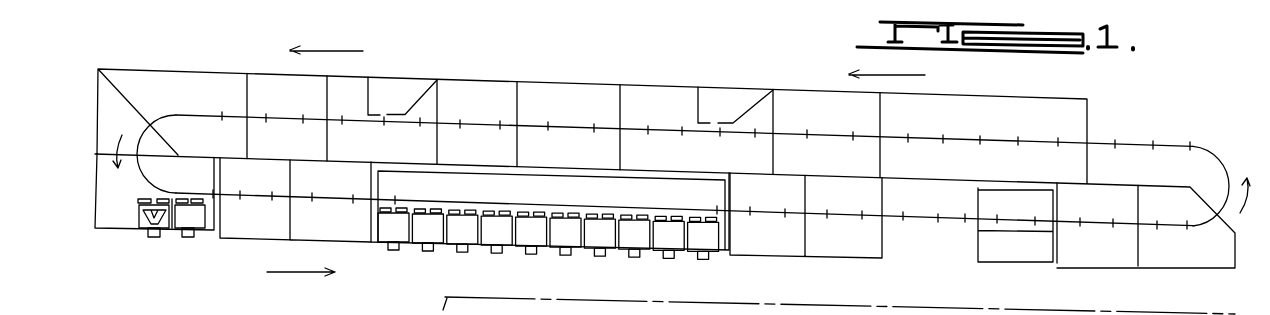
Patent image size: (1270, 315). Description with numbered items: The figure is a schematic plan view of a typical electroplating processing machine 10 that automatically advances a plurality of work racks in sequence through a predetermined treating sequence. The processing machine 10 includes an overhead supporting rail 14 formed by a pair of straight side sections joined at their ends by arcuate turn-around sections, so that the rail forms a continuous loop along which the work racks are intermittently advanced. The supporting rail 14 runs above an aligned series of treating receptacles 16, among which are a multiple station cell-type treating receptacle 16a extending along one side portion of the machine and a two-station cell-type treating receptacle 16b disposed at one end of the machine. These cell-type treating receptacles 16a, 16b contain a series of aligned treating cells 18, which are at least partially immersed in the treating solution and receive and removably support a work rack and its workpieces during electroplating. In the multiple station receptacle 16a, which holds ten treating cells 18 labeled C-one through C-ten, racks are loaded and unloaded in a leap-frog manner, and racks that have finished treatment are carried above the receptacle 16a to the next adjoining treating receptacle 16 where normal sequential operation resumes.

The processing machine 10 is at (1106, 129).
The overhead supporting rail 14 is at (920, 222).
The treating receptacles 16 is at (637, 89).
The multiple station cell-type treating receptacle 16a is at (555, 240).
The two-station cell-type treating receptacle 16b is at (113, 222).
The treating cells 18 is at (177, 233).